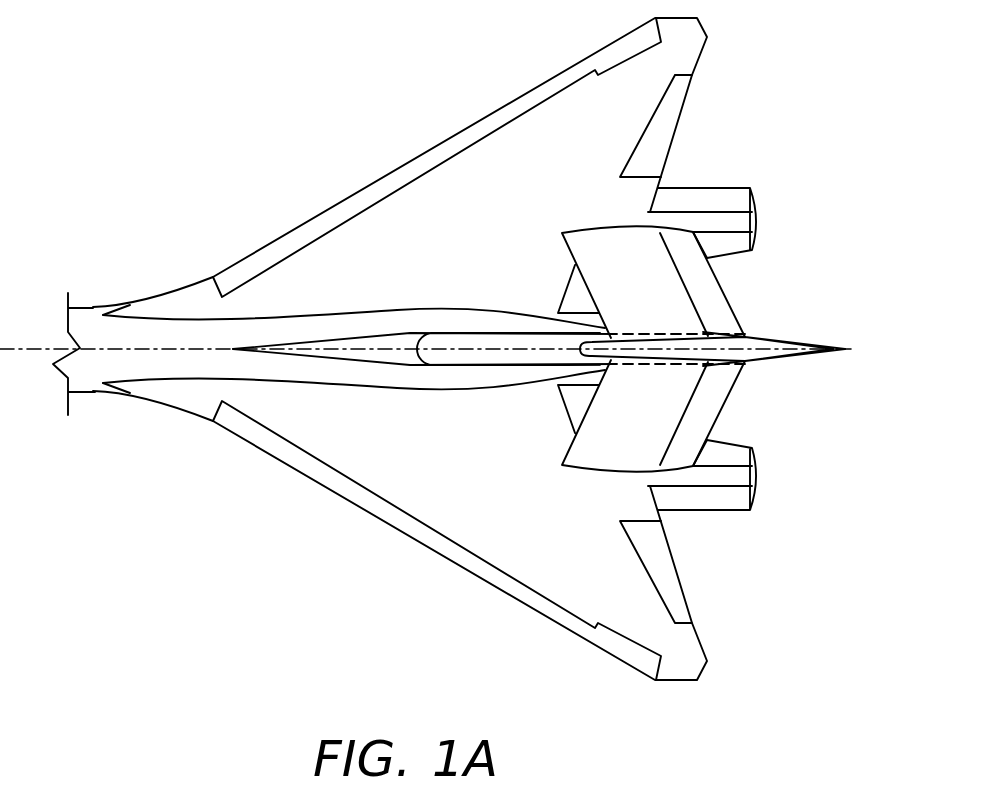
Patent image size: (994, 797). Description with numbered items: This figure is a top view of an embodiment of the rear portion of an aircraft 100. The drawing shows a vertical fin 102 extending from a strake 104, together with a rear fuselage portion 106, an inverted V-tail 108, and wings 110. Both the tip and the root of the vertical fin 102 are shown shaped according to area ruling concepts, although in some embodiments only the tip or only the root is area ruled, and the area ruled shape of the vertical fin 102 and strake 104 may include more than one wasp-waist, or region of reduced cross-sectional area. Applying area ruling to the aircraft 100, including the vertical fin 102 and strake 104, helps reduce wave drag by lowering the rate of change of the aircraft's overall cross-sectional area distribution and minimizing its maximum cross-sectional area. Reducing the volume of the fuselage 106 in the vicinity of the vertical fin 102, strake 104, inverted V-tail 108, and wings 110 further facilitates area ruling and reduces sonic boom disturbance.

The aircraft 100 is at (170, 87).
The vertical fin 102 is at (767, 345).
The strake 104 is at (385, 364).
The rear fuselage portion 106 is at (93, 307).
The inverted V-tail 108 is at (658, 297).
The wings 110 is at (432, 245).